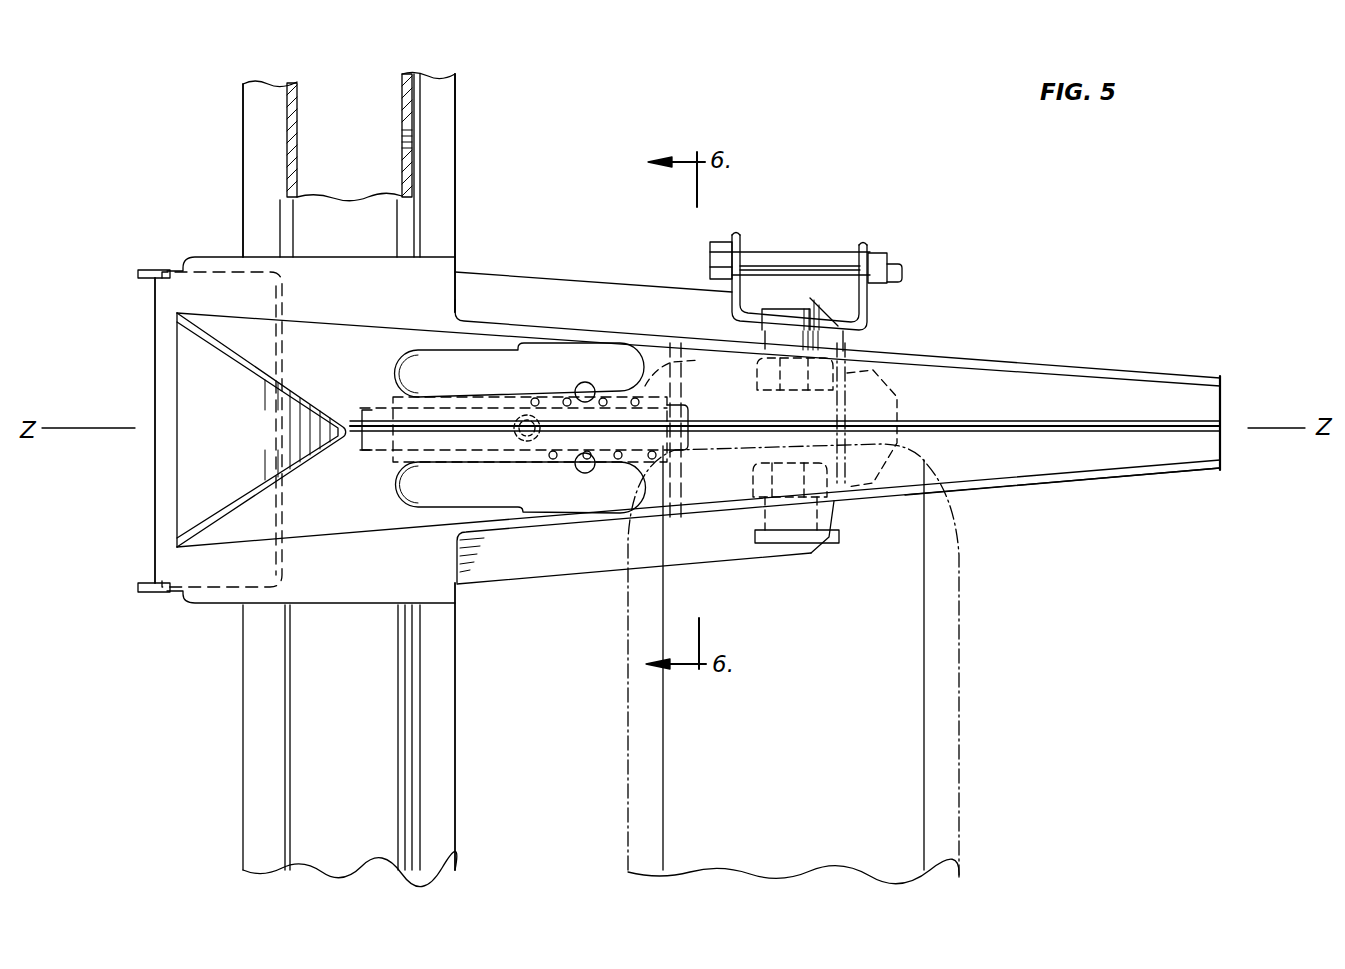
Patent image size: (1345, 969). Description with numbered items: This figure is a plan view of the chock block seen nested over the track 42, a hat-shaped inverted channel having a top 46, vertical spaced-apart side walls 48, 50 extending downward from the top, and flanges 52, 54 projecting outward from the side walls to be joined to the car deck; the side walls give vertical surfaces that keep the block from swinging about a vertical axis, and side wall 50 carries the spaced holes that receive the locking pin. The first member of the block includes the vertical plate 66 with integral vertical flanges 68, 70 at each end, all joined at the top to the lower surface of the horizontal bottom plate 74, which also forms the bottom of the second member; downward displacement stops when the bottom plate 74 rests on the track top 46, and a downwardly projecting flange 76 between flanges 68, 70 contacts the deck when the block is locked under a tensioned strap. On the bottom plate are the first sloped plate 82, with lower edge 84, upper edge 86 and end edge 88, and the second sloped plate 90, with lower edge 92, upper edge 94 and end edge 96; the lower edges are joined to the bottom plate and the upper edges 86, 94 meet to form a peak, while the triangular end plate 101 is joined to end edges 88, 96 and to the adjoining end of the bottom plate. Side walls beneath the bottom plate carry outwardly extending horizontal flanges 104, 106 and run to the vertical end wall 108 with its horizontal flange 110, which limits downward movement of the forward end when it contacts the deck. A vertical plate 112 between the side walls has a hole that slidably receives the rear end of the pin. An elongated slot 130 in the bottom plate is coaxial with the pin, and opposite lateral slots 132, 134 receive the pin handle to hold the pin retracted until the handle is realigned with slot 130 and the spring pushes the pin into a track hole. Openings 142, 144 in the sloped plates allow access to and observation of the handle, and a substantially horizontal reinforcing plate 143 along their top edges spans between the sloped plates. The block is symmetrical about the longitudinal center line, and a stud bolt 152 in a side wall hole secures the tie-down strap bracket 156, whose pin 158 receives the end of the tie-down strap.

The track 42 is at (463, 165).
The top 46 is at (350, 735).
The side wall 48 is at (296, 98).
The side wall 50 is at (402, 88).
The flange 52 is at (258, 148).
The flange 54 is at (437, 231).
The vertical plate 66 is at (281, 303).
The vertical flange 68 is at (165, 270).
The vertical flange 70 is at (167, 593).
The horizontal bottom plate 74 is at (437, 297).
The vertical flange 76 is at (152, 355).
The first sloped plate 82 is at (698, 503).
The lower edge 84 is at (1000, 480).
The upper edge 86 is at (1025, 427).
The end edge 88 is at (295, 477).
The second sloped plate 90 is at (698, 430).
The lower edge 92 is at (945, 356).
The upper edge 94 is at (740, 425).
The end edge 96 is at (240, 356).
The end plate 101 is at (262, 432).
The horizontal flange 104 is at (579, 556).
The horizontal flange 106 is at (630, 296).
The vertical end wall 108 is at (892, 376).
The horizontal flange 110 is at (895, 410).
The vertical plate 112 is at (688, 483).
The elongated slot 130 is at (545, 446).
The lateral slot 132 is at (610, 371).
The lateral slot 134 is at (584, 472).
The opening 142 is at (484, 488).
The reinforcing plate 143 is at (676, 365).
The opening 144 is at (474, 370).
The stud bolt 152 is at (837, 348).
The tie-down strap bracket 156 is at (886, 304).
The pin 158 is at (805, 262).